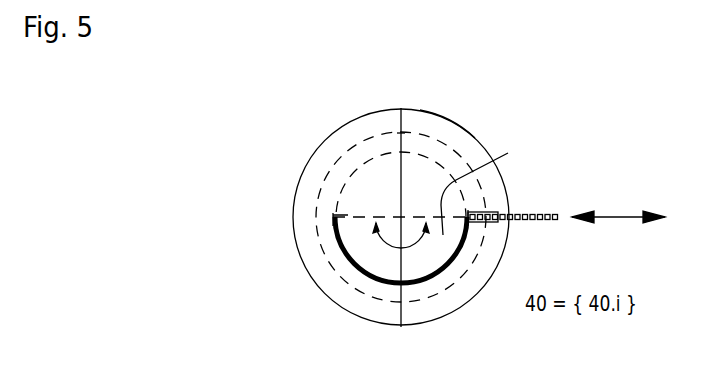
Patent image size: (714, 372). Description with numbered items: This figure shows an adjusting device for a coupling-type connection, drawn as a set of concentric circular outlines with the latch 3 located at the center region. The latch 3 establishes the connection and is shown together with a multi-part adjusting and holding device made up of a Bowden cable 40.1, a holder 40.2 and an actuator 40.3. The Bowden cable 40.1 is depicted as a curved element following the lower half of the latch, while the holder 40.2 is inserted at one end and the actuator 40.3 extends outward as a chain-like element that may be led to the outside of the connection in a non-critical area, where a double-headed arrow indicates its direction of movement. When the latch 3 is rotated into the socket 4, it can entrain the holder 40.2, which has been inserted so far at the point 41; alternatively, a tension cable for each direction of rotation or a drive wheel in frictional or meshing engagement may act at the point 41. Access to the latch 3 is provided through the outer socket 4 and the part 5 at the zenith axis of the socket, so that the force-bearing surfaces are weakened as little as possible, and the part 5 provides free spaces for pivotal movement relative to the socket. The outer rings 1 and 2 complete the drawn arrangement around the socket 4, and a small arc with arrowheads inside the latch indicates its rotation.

The outer wall 1 is at (330, 143).
The intermediate wall 2 is at (372, 140).
The latch 3 is at (482, 180).
The socket 4 is at (443, 150).
The part 5 is at (452, 125).
The Bowden cable 40.1 is at (364, 279).
The holder 40.2 is at (337, 215).
The actuator 40.3 is at (532, 210).
The point 41 is at (470, 224).